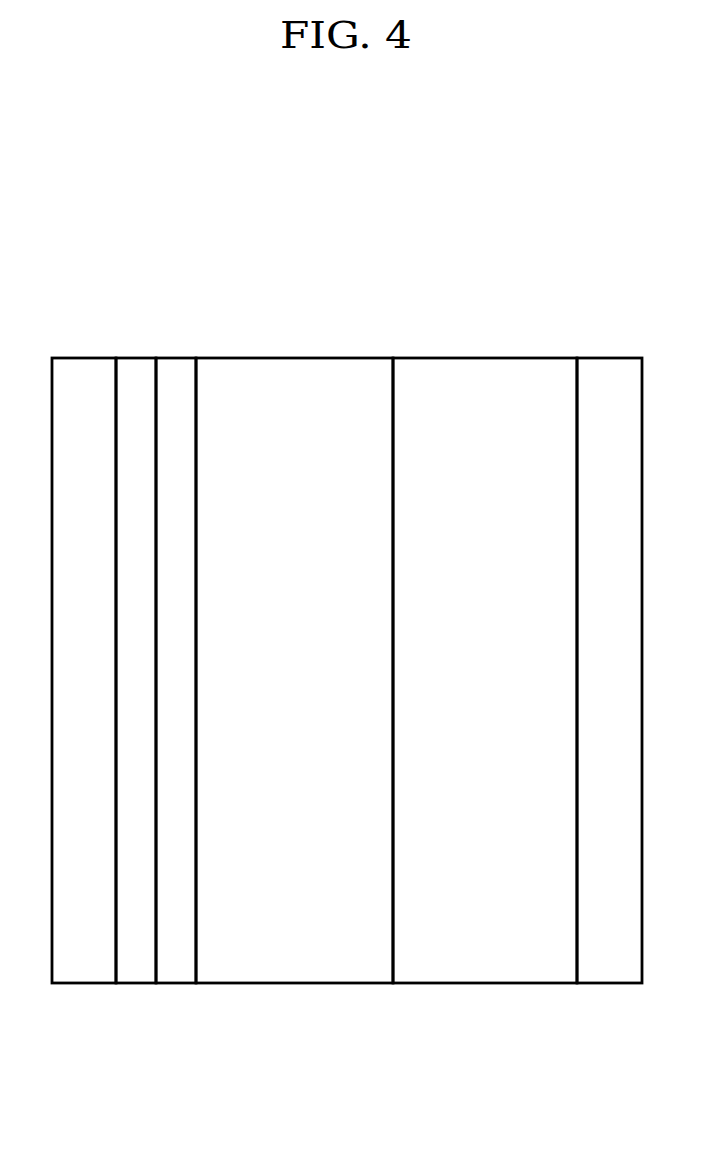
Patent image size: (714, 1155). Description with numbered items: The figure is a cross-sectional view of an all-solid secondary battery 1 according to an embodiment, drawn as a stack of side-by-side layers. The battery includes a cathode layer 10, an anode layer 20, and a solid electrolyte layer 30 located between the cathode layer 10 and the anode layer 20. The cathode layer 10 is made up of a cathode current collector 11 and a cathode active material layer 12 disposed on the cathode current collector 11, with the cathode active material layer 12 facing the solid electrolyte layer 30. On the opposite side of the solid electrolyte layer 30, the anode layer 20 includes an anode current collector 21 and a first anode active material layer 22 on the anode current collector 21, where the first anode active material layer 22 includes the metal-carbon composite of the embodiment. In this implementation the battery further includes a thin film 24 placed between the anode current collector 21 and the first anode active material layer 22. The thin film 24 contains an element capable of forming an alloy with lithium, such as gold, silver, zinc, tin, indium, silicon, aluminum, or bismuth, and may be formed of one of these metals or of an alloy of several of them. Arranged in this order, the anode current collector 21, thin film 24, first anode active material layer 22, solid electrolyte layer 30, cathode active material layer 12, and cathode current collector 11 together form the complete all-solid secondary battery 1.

The all-solid secondary battery 1 is at (405, 285).
The cathode layer 10 is at (482, 270).
The cathode current collector 11 is at (611, 367).
The cathode active material layer 12 is at (489, 367).
The anode layer 20 is at (184, 270).
The anode current collector 21 is at (83, 367).
The first anode active material layer 22 is at (177, 367).
The thin film 24 is at (137, 367).
The solid electrolyte layer 30 is at (293, 368).